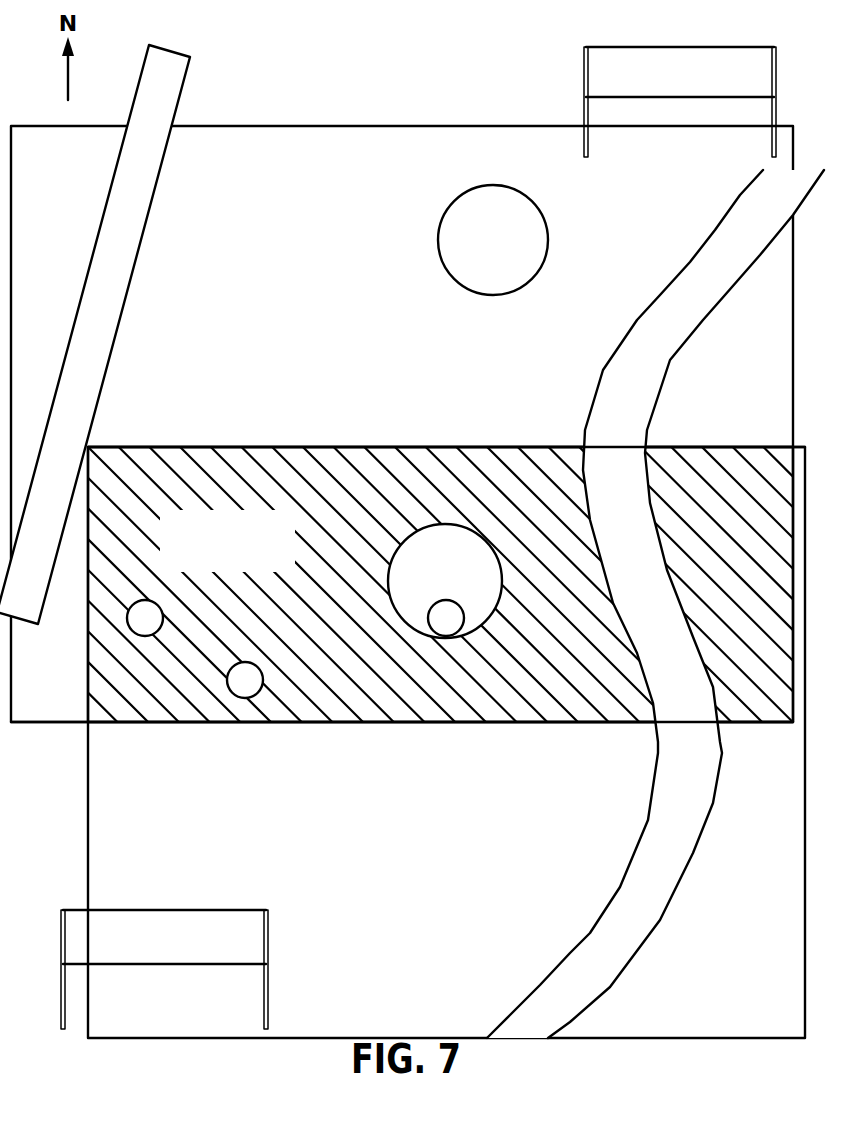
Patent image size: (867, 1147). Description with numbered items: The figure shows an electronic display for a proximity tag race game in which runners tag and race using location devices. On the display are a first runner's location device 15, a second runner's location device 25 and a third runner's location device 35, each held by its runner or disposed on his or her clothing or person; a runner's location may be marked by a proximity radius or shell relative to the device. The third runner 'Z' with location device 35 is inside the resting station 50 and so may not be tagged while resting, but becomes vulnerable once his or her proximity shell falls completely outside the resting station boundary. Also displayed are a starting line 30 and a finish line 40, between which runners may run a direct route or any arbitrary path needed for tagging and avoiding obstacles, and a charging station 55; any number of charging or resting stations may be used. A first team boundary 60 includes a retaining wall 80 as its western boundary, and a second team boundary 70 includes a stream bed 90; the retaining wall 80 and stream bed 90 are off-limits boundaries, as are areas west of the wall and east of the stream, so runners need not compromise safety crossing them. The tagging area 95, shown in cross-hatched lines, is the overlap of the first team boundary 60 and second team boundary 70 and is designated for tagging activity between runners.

The first runner's location device 15 is at (129, 612).
The second runner's location device 25 is at (228, 670).
The third runner's location device 35 is at (460, 632).
The starting line 30 is at (165, 910).
The finish line 40 is at (584, 68).
The resting station 50 is at (438, 523).
The charging station 55 is at (438, 250).
The first team boundary 60 is at (258, 127).
The second team boundary 70 is at (752, 1041).
The retaining wall 80 is at (78, 303).
The stream bed 90 is at (622, 330).
The tagging area 95 is at (244, 514).